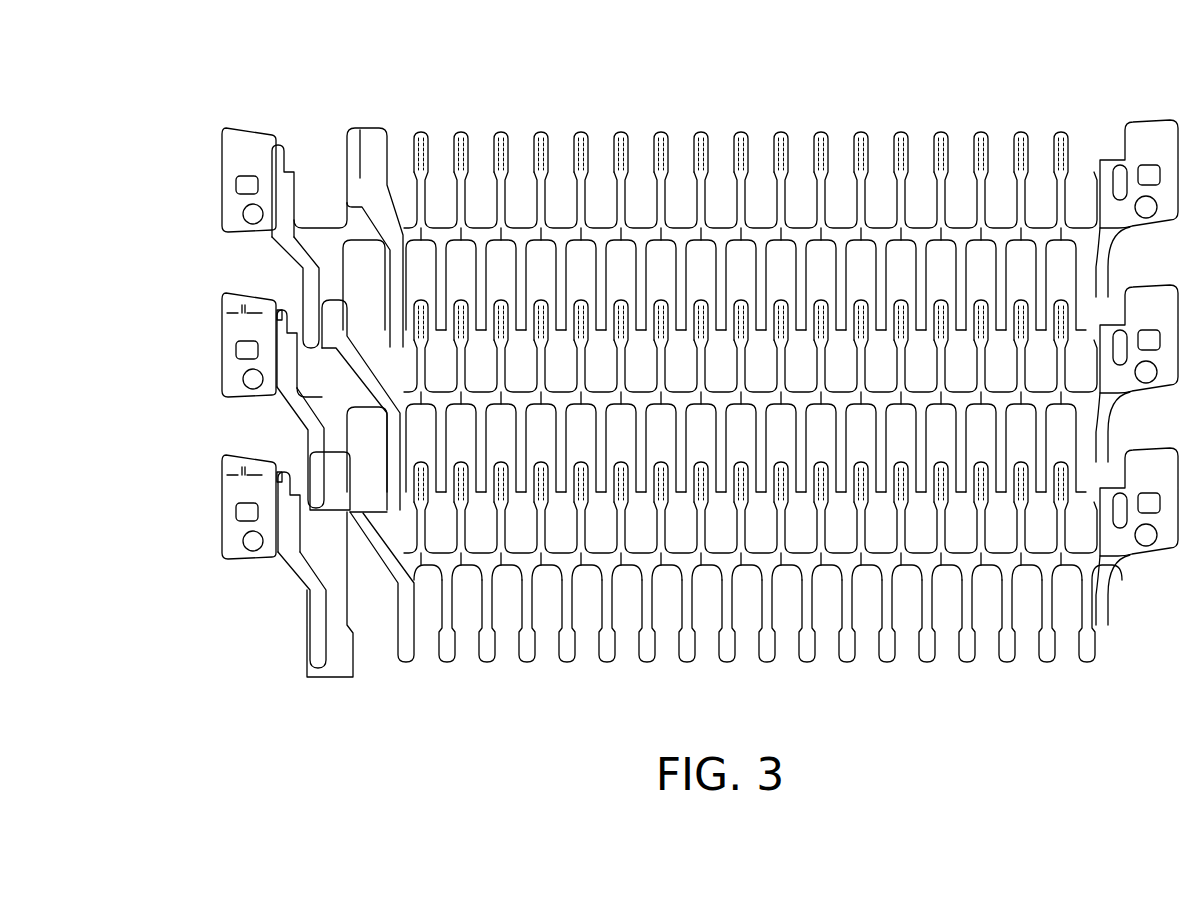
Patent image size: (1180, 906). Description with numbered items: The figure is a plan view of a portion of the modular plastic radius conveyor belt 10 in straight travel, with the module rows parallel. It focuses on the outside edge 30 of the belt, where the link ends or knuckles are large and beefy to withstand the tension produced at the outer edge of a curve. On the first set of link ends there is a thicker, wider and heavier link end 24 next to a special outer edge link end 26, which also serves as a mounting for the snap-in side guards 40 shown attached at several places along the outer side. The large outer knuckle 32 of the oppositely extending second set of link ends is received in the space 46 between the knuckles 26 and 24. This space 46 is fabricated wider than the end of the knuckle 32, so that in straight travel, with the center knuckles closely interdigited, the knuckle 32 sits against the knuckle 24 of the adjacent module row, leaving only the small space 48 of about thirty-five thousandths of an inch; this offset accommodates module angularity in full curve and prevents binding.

The modular plastic radius conveyor belt 10 is at (578, 679).
The outer link end 24 is at (367, 453).
The special outer edge link end 26 is at (242, 458).
The outside edge 30 is at (286, 612).
The outer knuckle of second set of link ends 32 is at (300, 488).
The snap-in side guards 40 is at (278, 165).
The space 46 is at (320, 520).
The small space 48 is at (303, 437).